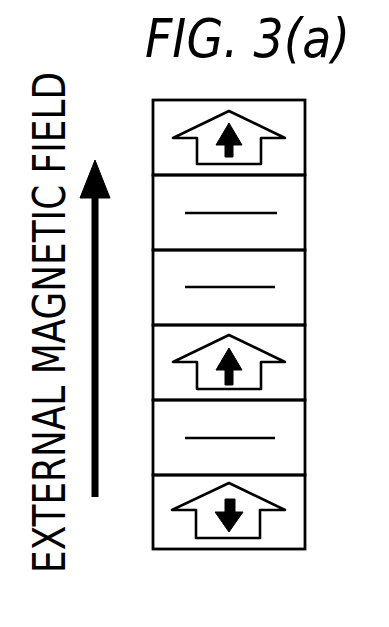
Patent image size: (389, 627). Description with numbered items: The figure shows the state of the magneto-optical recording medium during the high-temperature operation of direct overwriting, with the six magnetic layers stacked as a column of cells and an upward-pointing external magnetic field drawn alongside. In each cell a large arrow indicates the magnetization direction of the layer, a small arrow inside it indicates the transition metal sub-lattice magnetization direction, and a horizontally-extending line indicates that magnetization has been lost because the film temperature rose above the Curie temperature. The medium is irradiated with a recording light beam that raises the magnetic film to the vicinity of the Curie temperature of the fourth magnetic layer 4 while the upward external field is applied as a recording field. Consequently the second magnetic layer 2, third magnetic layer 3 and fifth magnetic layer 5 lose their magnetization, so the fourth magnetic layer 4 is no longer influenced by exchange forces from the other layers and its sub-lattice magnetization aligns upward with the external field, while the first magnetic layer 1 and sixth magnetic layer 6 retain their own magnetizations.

The first magnetic layer 1 is at (293, 131).
The second magnetic layer 2 is at (292, 209).
The third magnetic layer 3 is at (292, 288).
The fourth magnetic layer 4 is at (292, 361).
The fifth magnetic layer 5 is at (292, 435).
The sixth magnetic layer 6 is at (296, 521).